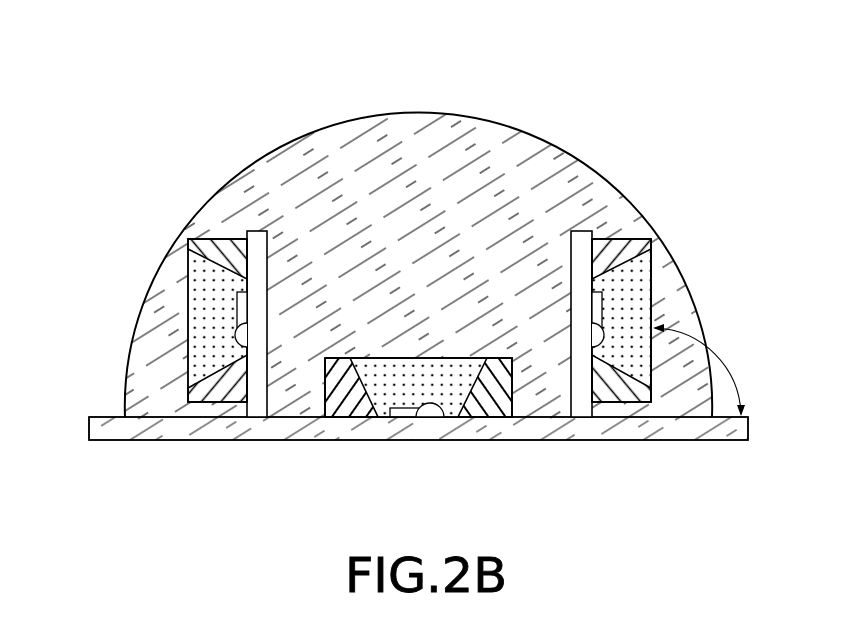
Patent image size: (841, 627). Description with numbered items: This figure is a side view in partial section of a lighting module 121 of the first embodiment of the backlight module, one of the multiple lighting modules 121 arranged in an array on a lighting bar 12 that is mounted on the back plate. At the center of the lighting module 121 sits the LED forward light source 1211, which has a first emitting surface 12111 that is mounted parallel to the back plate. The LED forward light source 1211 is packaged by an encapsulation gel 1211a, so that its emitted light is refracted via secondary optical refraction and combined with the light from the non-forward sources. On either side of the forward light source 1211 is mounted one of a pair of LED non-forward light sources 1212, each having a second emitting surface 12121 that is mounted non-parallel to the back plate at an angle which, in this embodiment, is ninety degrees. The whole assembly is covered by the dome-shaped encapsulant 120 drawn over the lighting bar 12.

The lighting module 121 is at (74, 39).
The encapsulant lens 120 is at (646, 221).
The lighting bar 12 is at (284, 428).
The LED forward light source 1211 is at (452, 285).
The encapsulation gel 1211a is at (634, 309).
The first emitting surface 12111 is at (473, 357).
The LED non-forward light source 1212 is at (564, 365).
The second emitting surface 12121 is at (653, 271).